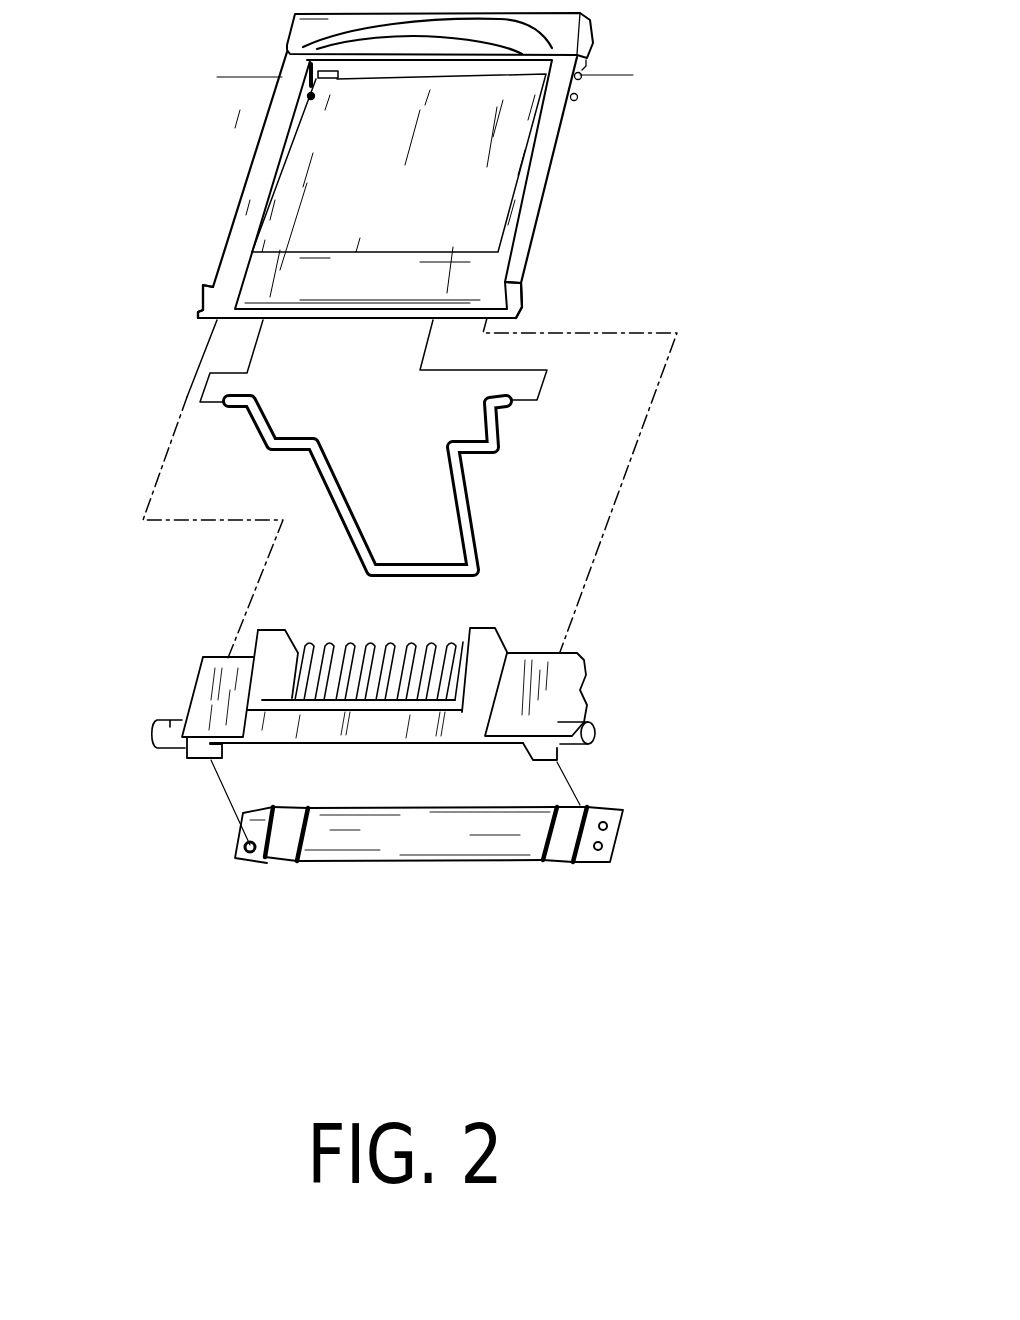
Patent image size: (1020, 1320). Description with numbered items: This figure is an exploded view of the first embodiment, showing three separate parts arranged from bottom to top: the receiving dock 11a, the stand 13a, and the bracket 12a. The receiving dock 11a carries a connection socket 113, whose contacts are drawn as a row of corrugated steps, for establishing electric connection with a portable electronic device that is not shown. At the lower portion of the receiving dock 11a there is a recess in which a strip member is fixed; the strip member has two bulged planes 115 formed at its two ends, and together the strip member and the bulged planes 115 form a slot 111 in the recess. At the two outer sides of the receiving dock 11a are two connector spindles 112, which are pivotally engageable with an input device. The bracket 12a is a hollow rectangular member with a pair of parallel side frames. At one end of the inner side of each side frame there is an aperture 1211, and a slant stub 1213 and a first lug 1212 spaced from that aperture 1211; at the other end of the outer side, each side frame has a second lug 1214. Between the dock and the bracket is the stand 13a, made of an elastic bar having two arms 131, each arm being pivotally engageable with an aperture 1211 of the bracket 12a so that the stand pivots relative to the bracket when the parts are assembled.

The bracket 12a is at (558, 184).
The aperture 1211 is at (590, 62).
The first lug 1212 is at (314, 98).
The slant stub 1213 is at (328, 77).
The second lug 1214 is at (203, 297).
The stand 13a is at (418, 460).
The arms 131 is at (498, 423).
The receiving dock 11a is at (403, 714).
The slot 111 is at (505, 750).
The connector spindles 112 is at (577, 728).
The connection socket 113 is at (312, 664).
The bulged planes 115 is at (570, 835).